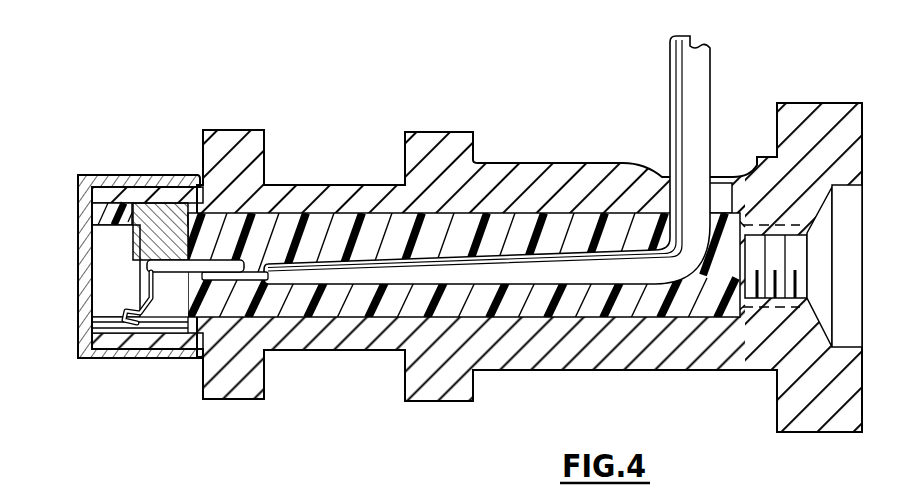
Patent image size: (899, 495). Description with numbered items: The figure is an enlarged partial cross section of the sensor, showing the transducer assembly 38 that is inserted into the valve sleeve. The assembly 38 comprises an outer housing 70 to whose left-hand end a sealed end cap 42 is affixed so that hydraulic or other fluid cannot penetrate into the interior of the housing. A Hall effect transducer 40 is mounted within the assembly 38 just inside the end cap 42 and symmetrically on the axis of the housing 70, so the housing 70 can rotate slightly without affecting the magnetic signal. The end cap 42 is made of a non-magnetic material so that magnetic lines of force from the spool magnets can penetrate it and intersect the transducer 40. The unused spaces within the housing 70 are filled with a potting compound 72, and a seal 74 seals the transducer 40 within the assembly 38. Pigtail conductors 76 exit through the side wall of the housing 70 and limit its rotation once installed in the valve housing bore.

The transducer assembly 38 is at (527, 378).
The Hall effect transducer 40 is at (103, 287).
The sealed end cap 42 is at (118, 360).
The outer housing 70 is at (682, 362).
The potting compound 72 is at (317, 224).
The seal 74 is at (161, 207).
The pigtail conductors 76 is at (708, 77).